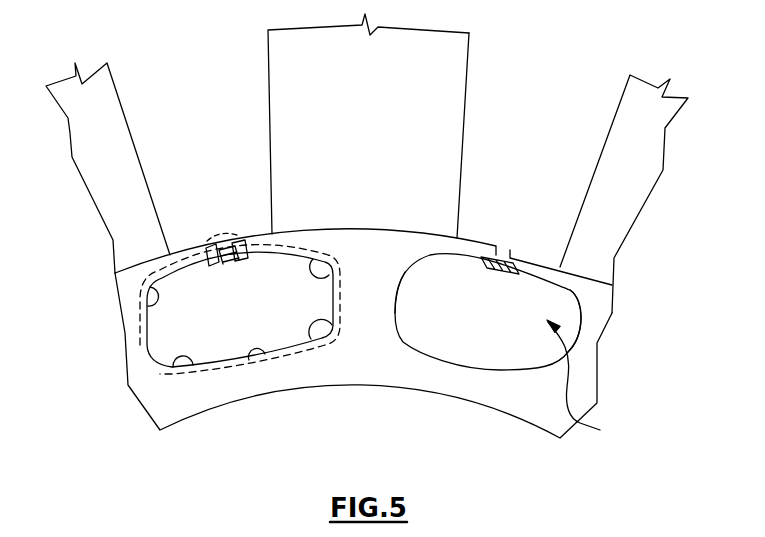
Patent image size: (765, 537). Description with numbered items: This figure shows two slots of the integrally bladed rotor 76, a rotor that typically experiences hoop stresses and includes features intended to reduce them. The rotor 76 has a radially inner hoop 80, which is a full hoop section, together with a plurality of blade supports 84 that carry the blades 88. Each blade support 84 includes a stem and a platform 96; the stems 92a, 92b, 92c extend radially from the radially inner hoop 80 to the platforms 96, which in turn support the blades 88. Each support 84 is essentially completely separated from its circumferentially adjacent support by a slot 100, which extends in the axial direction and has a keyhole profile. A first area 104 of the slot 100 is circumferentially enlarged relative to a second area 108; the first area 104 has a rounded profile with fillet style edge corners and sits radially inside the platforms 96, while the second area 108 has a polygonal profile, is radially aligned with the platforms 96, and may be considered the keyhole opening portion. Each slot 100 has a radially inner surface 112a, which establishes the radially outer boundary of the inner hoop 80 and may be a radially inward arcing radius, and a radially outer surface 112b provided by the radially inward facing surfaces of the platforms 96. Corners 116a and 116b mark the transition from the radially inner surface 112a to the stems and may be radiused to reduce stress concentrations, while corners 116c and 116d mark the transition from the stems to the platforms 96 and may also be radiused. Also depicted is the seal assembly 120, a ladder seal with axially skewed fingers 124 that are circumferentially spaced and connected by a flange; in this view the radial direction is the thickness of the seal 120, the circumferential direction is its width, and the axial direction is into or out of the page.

The integrally bladed rotor 76 is at (445, 113).
The radially inner hoop 80 is at (507, 400).
The blade support 84 is at (380, 283).
The blade 88 is at (440, 173).
The stem 92a is at (125, 328).
The stem 92b is at (385, 317).
The stem 92c is at (570, 338).
The platform 96 is at (432, 247).
The slot 100 is at (593, 383).
The first area 104 is at (143, 355).
The second area 108 is at (232, 241).
The radially inner surface 112a is at (255, 357).
The radially outer surface 112b is at (193, 247).
The corner 116a is at (192, 367).
The corner 116b is at (320, 340).
The corner 116c is at (327, 266).
The corner 116d is at (147, 307).
The seal assembly 120 is at (243, 257).
The finger 124 is at (213, 263).